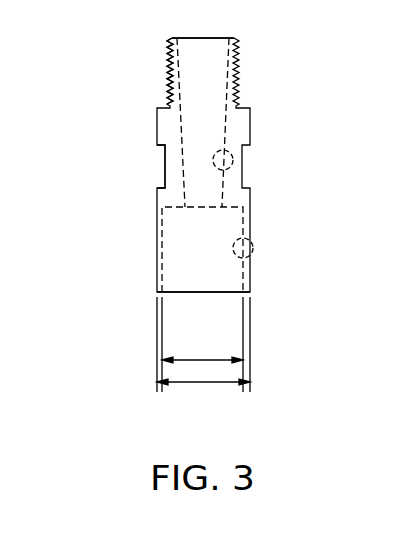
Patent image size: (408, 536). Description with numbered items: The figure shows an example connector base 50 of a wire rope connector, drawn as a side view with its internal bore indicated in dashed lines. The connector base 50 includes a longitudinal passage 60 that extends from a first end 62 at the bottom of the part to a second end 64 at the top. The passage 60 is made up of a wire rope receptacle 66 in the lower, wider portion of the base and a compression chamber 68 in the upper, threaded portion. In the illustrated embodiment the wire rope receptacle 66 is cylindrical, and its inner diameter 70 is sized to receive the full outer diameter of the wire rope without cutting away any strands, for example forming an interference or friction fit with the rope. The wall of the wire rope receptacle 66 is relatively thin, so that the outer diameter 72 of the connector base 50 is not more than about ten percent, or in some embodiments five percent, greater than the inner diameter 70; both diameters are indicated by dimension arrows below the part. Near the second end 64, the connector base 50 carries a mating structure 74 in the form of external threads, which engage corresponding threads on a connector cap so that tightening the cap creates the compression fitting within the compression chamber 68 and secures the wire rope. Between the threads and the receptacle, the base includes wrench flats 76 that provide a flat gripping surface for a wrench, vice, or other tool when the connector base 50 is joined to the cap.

The connector base 50 is at (112, 240).
The longitudinal passage 60 is at (231, 167).
The first end 62 is at (197, 294).
The second end 64 is at (218, 38).
The wire rope receptacle 66 is at (216, 260).
The compression chamber 68 is at (216, 92).
The inner diameter 70 is at (210, 357).
The outer diameter 72 is at (203, 383).
The mating structure 74 is at (168, 60).
The wrench flats 76 is at (165, 162).